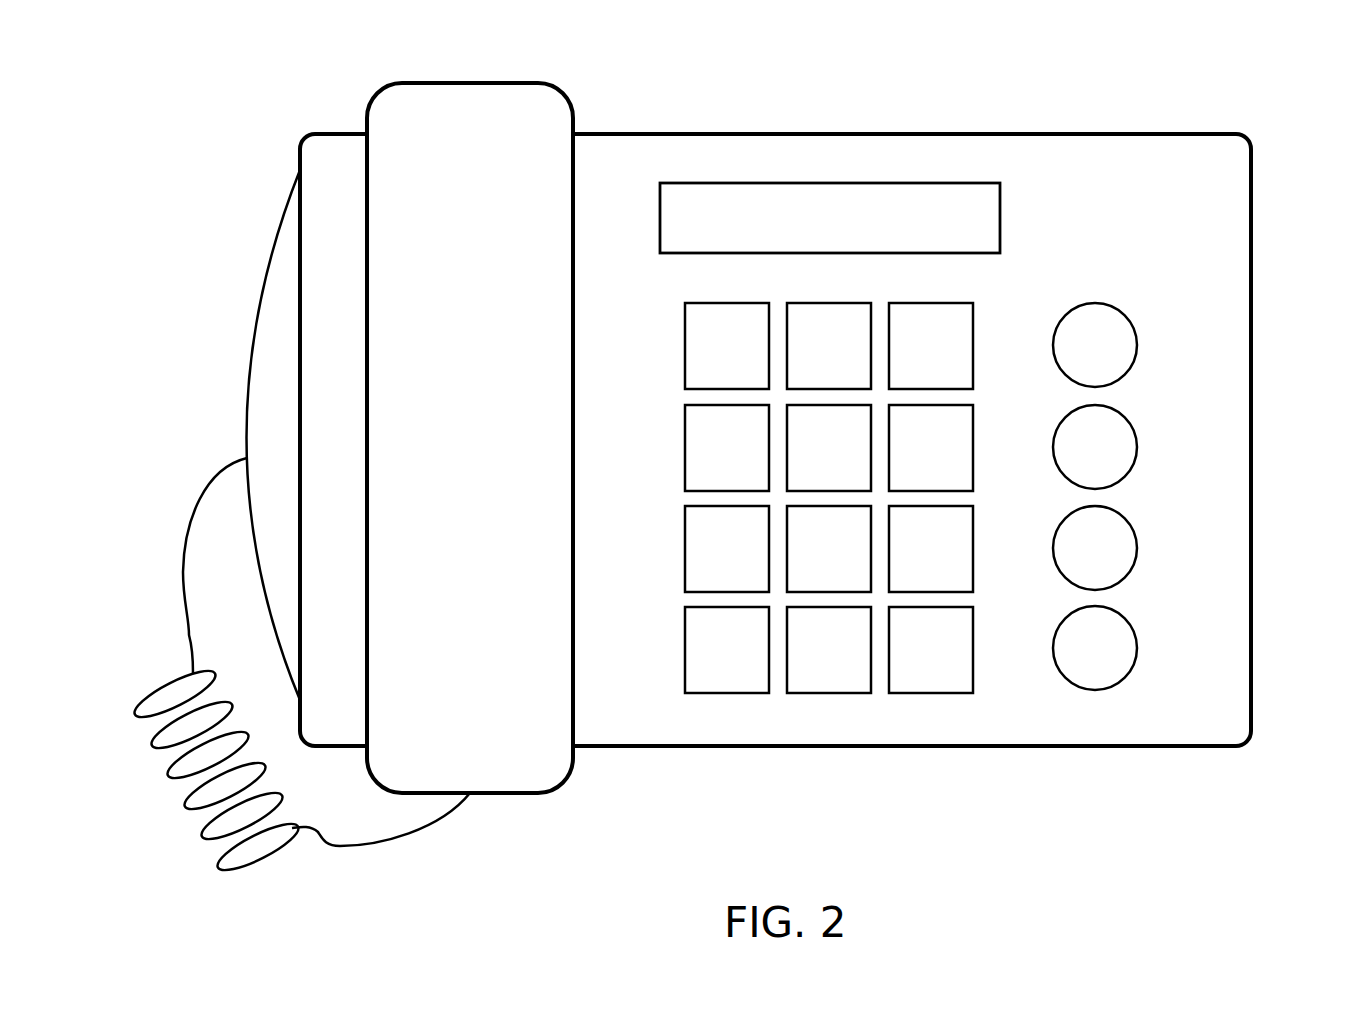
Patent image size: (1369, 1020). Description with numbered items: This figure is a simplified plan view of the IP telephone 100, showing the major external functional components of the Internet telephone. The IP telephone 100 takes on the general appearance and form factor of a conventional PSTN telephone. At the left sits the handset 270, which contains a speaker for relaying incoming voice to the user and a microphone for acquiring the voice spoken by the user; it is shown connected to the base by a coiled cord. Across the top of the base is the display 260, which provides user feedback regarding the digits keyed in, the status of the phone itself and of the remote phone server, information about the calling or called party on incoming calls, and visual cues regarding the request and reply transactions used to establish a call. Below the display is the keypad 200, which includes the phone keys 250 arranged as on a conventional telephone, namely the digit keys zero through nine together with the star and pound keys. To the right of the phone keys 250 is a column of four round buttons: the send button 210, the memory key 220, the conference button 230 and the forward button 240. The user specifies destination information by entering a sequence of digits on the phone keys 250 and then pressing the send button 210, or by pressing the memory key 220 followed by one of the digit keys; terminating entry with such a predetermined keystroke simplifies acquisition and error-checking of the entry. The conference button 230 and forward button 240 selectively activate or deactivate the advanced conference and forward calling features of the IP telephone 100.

The IP telephone 100 is at (742, 478).
The keypad 200 is at (1204, 490).
The send button (SND) 210 is at (1112, 311).
The memory key (M) 220 is at (1112, 413).
The conference (CNF) button 230 is at (1112, 514).
The forward (FWD) button 240 is at (1119, 641).
The phone keys 250 is at (973, 757).
The display 260 is at (887, 183).
The handset 270 is at (466, 84).